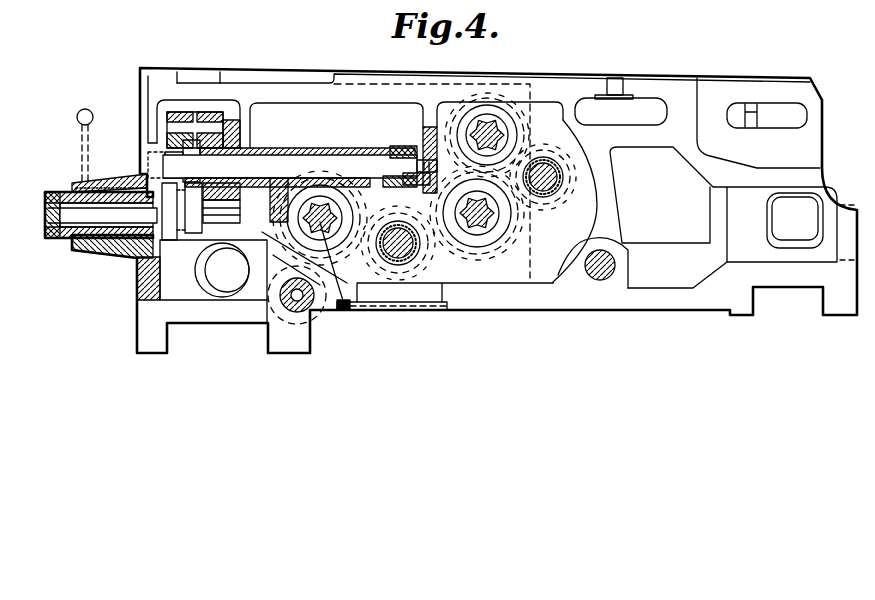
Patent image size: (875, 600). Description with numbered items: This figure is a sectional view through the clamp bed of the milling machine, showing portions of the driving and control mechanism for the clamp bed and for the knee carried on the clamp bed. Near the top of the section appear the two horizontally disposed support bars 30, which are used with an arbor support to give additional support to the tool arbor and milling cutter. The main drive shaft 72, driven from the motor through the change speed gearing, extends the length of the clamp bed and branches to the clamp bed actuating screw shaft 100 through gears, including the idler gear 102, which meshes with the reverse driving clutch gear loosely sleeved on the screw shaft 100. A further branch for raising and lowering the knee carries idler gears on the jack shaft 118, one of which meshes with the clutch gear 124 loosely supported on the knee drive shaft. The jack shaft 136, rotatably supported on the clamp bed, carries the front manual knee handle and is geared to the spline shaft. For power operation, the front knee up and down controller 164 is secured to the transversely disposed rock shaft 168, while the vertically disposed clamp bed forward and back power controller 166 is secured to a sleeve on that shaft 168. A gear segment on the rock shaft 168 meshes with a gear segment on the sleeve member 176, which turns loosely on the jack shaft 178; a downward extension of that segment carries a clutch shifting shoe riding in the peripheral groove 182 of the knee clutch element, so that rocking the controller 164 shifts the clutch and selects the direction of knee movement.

The support bars 30 is at (455, 226).
The main drive shaft 72 is at (491, 127).
The clamp bed actuating screw shaft 100 is at (483, 232).
The idler gear 102 is at (546, 140).
The jack shaft 118 is at (398, 250).
The clutch gear 124 is at (326, 228).
The jack shaft 136 is at (287, 305).
The front knee up and down controller 164 is at (50, 238).
The front clamp bed forward and back power controller 166 is at (80, 188).
The rock shaft 168 is at (90, 215).
The sleeve member 176 is at (262, 147).
The jack shaft 178 is at (353, 162).
The peripheral groove 182 is at (344, 312).